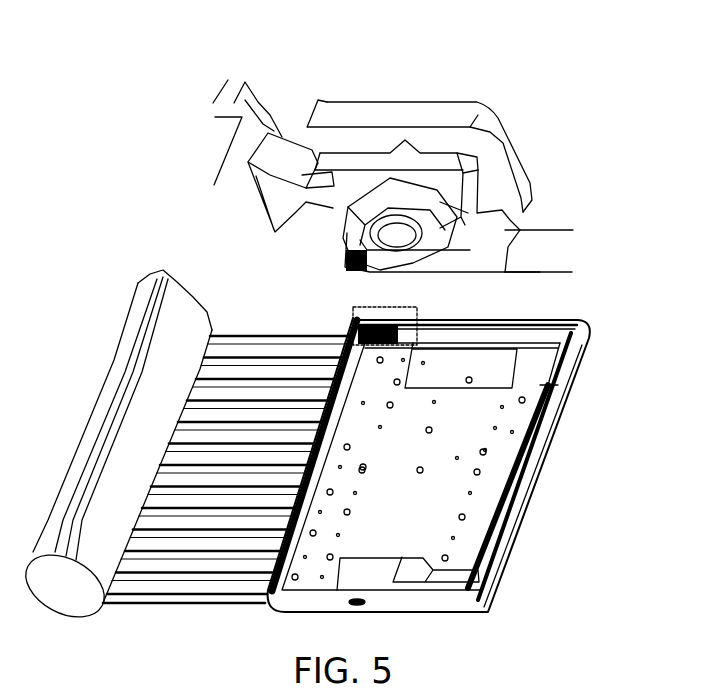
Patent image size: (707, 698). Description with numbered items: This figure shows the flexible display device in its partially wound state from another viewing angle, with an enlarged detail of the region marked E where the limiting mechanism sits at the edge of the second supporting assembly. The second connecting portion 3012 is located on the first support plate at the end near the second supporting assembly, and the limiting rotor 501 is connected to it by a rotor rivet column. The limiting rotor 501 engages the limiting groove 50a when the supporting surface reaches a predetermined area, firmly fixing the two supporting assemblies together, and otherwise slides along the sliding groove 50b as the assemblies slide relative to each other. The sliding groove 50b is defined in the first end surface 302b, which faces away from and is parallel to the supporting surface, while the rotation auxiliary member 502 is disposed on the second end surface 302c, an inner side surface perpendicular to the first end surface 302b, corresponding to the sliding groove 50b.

The second connecting portion 3012 is at (477, 117).
The rotation auxiliary member 502 is at (285, 166).
The limiting rotor 501 is at (473, 237).
The limiting groove 50a is at (512, 231).
The sliding groove 50b is at (548, 248).
The first end surface 302b is at (440, 453).
The second end surface 302c is at (336, 435).
The enlarged detail region E is at (388, 69).